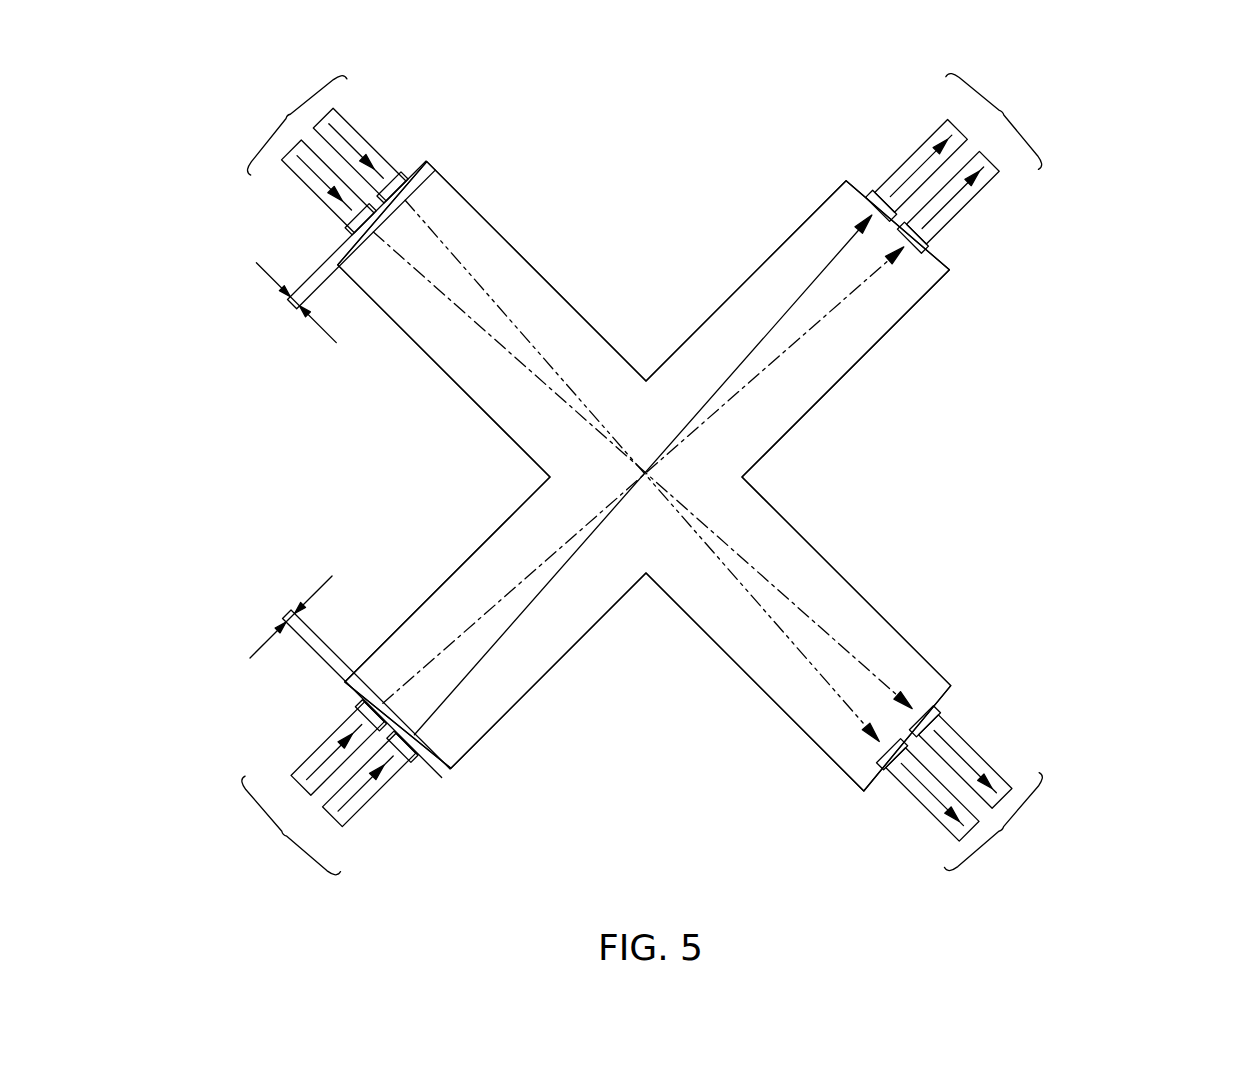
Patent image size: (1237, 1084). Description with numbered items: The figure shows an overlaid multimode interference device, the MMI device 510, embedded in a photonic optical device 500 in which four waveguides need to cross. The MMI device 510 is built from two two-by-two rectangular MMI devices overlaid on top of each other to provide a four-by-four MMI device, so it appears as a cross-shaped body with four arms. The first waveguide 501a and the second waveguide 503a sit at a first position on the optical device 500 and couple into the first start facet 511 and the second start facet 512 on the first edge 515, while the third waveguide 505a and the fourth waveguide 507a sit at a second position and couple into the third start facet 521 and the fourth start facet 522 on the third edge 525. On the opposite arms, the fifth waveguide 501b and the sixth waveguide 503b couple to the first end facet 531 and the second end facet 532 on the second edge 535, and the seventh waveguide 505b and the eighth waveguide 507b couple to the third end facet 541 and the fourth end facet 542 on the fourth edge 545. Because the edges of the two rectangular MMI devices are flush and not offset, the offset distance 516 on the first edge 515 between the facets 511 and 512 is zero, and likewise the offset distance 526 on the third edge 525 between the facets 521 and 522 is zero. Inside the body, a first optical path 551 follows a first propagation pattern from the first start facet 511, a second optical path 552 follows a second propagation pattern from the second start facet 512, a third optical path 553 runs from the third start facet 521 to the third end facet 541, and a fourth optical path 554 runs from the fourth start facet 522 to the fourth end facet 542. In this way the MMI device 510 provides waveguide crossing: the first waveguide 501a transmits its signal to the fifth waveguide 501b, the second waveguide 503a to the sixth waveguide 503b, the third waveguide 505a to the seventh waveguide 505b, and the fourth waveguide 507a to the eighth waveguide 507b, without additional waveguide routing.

The optical device 500 is at (1222, 63).
The MMI device 510 is at (530, 265).
The first waveguide 501a is at (377, 149).
The fifth waveguide 501b is at (910, 807).
The second waveguide 503a is at (323, 213).
The sixth waveguide 503b is at (955, 723).
The third waveguide 505a is at (333, 727).
The seventh waveguide 505b is at (980, 196).
The fourth waveguide 507a is at (420, 788).
The eighth waveguide 507b is at (918, 148).
The first start facet 511 is at (407, 183).
The second start facet 512 is at (385, 224).
The first edge 515 is at (287, 114).
The offset distance 516 is at (290, 302).
The third start facet 521 is at (378, 697).
The fourth start facet 522 is at (432, 738).
The third edge 525 is at (283, 834).
The offset distance 526 is at (287, 623).
The first end facet 531 is at (887, 768).
The second end facet 532 is at (908, 722).
The second edge 535 is at (1002, 831).
The third end facet 541 is at (917, 247).
The fourth end facet 542 is at (863, 205).
The fourth edge 545 is at (1003, 111).
The first optical path 551 is at (536, 347).
The second optical path 552 is at (492, 347).
The third optical path 553 is at (500, 597).
The fourth optical path 554 is at (497, 640).